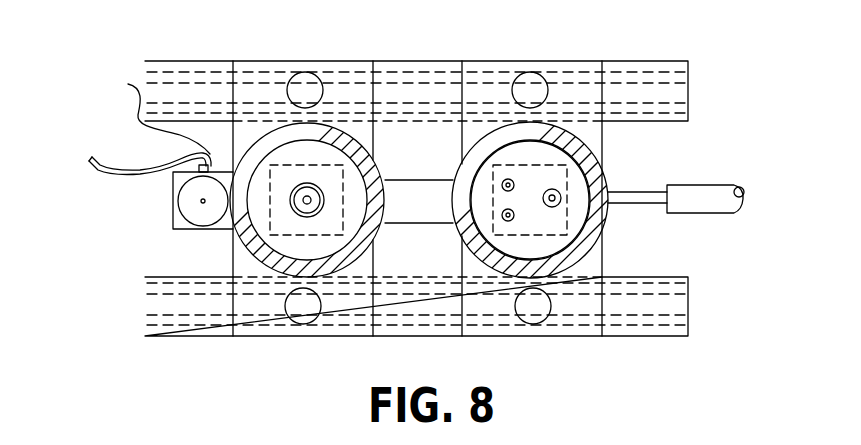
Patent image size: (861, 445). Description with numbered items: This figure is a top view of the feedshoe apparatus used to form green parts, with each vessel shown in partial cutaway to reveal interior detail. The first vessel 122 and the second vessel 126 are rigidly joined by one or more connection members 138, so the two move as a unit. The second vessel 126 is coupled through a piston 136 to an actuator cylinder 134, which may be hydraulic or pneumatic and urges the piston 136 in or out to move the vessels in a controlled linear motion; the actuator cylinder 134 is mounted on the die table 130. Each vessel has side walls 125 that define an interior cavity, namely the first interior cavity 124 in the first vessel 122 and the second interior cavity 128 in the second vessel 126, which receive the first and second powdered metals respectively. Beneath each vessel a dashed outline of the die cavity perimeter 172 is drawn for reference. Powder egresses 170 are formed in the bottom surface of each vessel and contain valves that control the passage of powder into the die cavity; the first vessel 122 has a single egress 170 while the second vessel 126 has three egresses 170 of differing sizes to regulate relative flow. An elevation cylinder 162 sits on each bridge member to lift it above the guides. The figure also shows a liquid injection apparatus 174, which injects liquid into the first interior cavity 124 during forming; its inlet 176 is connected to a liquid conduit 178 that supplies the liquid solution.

The first vessel 122 is at (383, 177).
The first interior cavity 124 is at (348, 170).
The side walls 125 is at (580, 210).
The second vessel 126 is at (567, 183).
The second interior cavity 128 is at (610, 208).
The die table 130 is at (677, 93).
The actuator cylinder 134 is at (710, 207).
The piston 136 is at (725, 183).
The connection members 138 is at (442, 215).
The elevation cylinder 162 is at (303, 86).
The powder egresses 170 is at (508, 185).
The die cavity perimeter 172 is at (594, 164).
The liquid injection apparatus 174 is at (175, 217).
The inlet to the injection apparatus 176 is at (147, 115).
The liquid conduit 178 is at (117, 167).